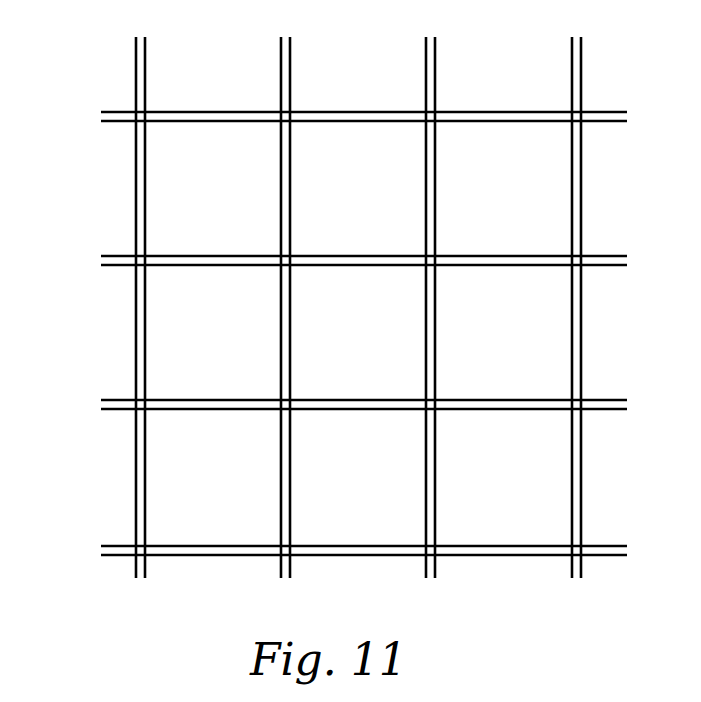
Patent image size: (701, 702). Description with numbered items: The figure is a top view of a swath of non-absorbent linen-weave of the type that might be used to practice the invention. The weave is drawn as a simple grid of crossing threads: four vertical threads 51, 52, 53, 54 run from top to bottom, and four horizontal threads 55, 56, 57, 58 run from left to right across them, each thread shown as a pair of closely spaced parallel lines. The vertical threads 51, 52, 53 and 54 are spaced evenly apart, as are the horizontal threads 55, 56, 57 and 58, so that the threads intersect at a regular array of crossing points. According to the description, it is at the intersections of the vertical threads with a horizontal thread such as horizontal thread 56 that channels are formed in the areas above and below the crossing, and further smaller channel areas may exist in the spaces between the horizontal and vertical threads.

The vertical thread 51 is at (136, 72).
The vertical thread 52 is at (281, 75).
The vertical thread 53 is at (426, 75).
The vertical thread 54 is at (572, 79).
The horizontal thread 55 is at (125, 115).
The horizontal thread 56 is at (120, 256).
The horizontal thread 57 is at (120, 400).
The horizontal thread 58 is at (120, 546).